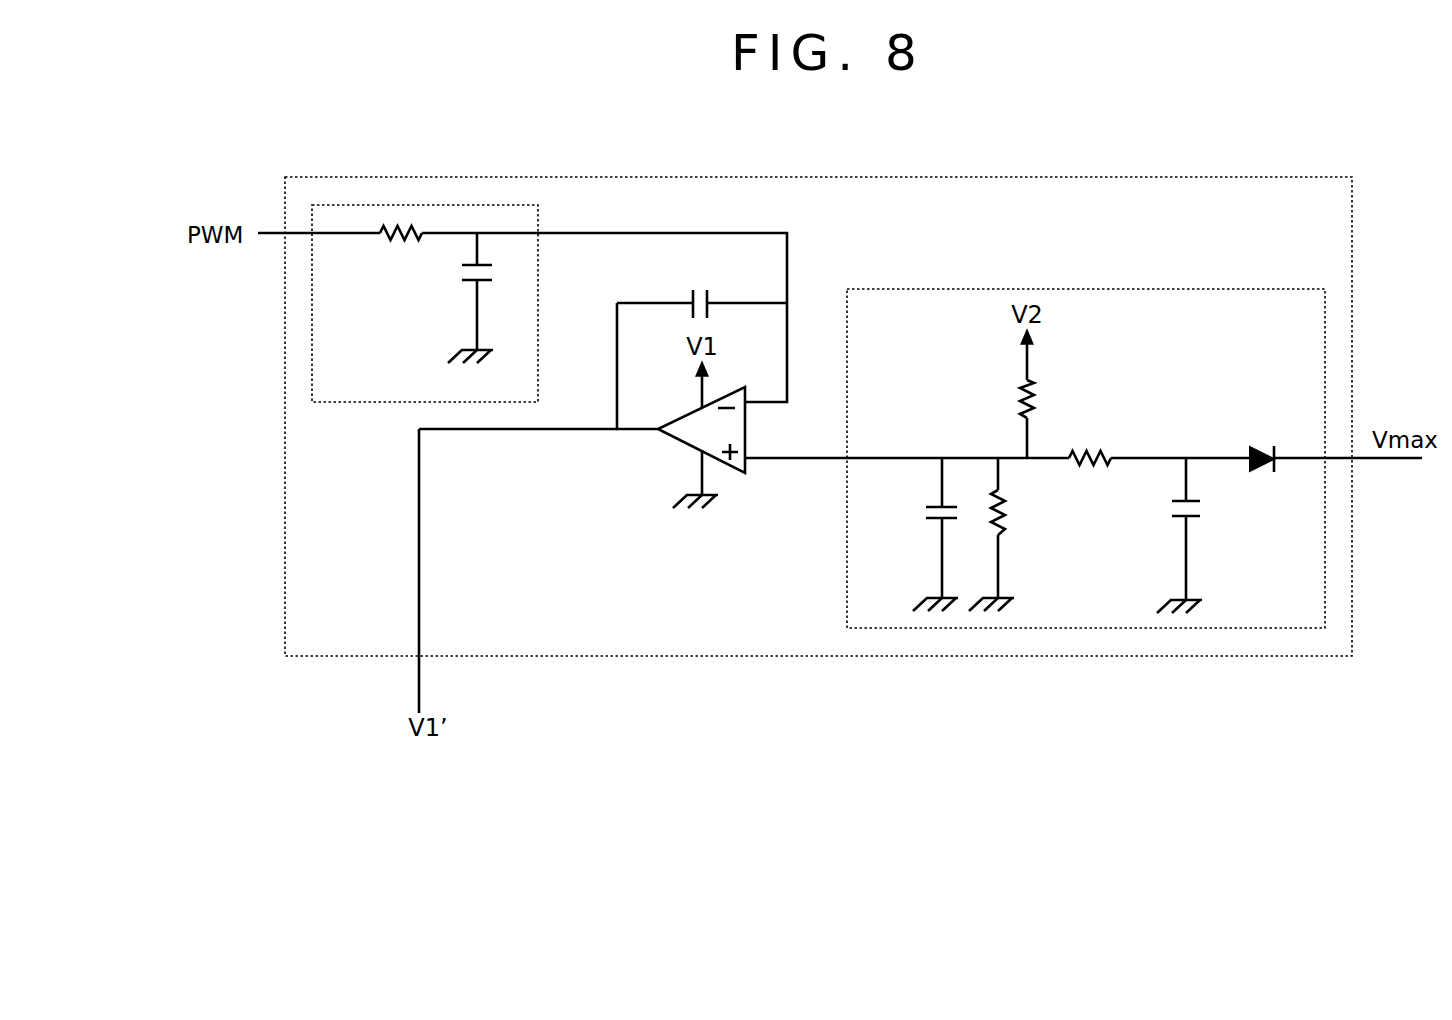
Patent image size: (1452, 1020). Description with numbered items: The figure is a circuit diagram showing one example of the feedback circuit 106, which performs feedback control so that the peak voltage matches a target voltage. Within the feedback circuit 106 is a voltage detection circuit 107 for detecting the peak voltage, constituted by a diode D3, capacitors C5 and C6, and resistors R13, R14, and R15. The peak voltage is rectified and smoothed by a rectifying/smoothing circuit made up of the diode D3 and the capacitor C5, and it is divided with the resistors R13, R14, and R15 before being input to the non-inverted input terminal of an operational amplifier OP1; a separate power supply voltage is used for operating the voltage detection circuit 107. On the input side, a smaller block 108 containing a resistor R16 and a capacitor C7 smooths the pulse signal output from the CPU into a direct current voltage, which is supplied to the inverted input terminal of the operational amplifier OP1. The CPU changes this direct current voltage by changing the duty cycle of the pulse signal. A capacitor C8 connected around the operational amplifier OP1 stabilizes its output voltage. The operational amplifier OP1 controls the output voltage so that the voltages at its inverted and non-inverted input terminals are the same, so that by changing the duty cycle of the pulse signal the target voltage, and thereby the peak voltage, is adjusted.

The feedback circuit 106 is at (545, 177).
The voltage detection circuit 107 is at (1228, 289).
The smoothing circuit 108 is at (347, 205).
The resistor R16 is at (398, 242).
The capacitor C7 is at (463, 288).
The capacitor C8 is at (699, 290).
The operational amplifier OP1 is at (688, 432).
The resistor R14 is at (1017, 403).
The resistor R13 is at (1085, 440).
The resistor R15 is at (1004, 506).
The capacitor C6 is at (926, 511).
The capacitor C5 is at (1205, 504).
The diode D3 is at (1270, 447).